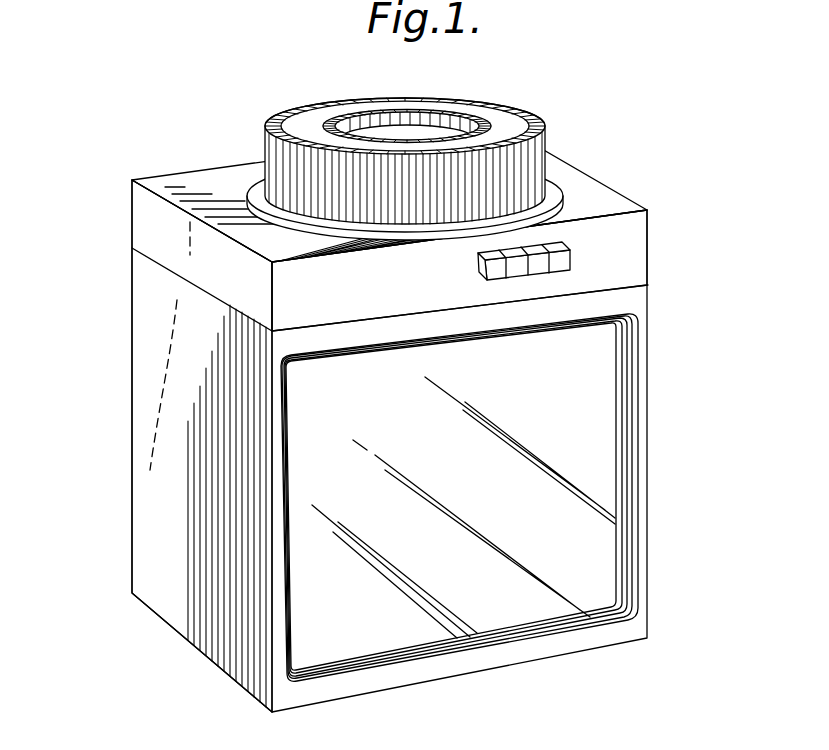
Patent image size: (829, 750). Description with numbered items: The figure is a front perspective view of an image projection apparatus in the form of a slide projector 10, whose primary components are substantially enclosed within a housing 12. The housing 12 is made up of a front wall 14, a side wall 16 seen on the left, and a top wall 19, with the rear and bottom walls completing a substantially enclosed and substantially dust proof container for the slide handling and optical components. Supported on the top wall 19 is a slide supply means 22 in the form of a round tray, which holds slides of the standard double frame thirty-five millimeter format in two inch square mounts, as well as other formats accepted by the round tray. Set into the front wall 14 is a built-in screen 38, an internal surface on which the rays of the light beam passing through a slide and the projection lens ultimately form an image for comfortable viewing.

The slide projector 10 is at (667, 236).
The housing 12 is at (160, 477).
The front wall 14 is at (632, 293).
The side wall 16 is at (145, 323).
The top wall 19 is at (212, 172).
The slide supply means 22 is at (537, 123).
The built-in screen 38 is at (605, 453).